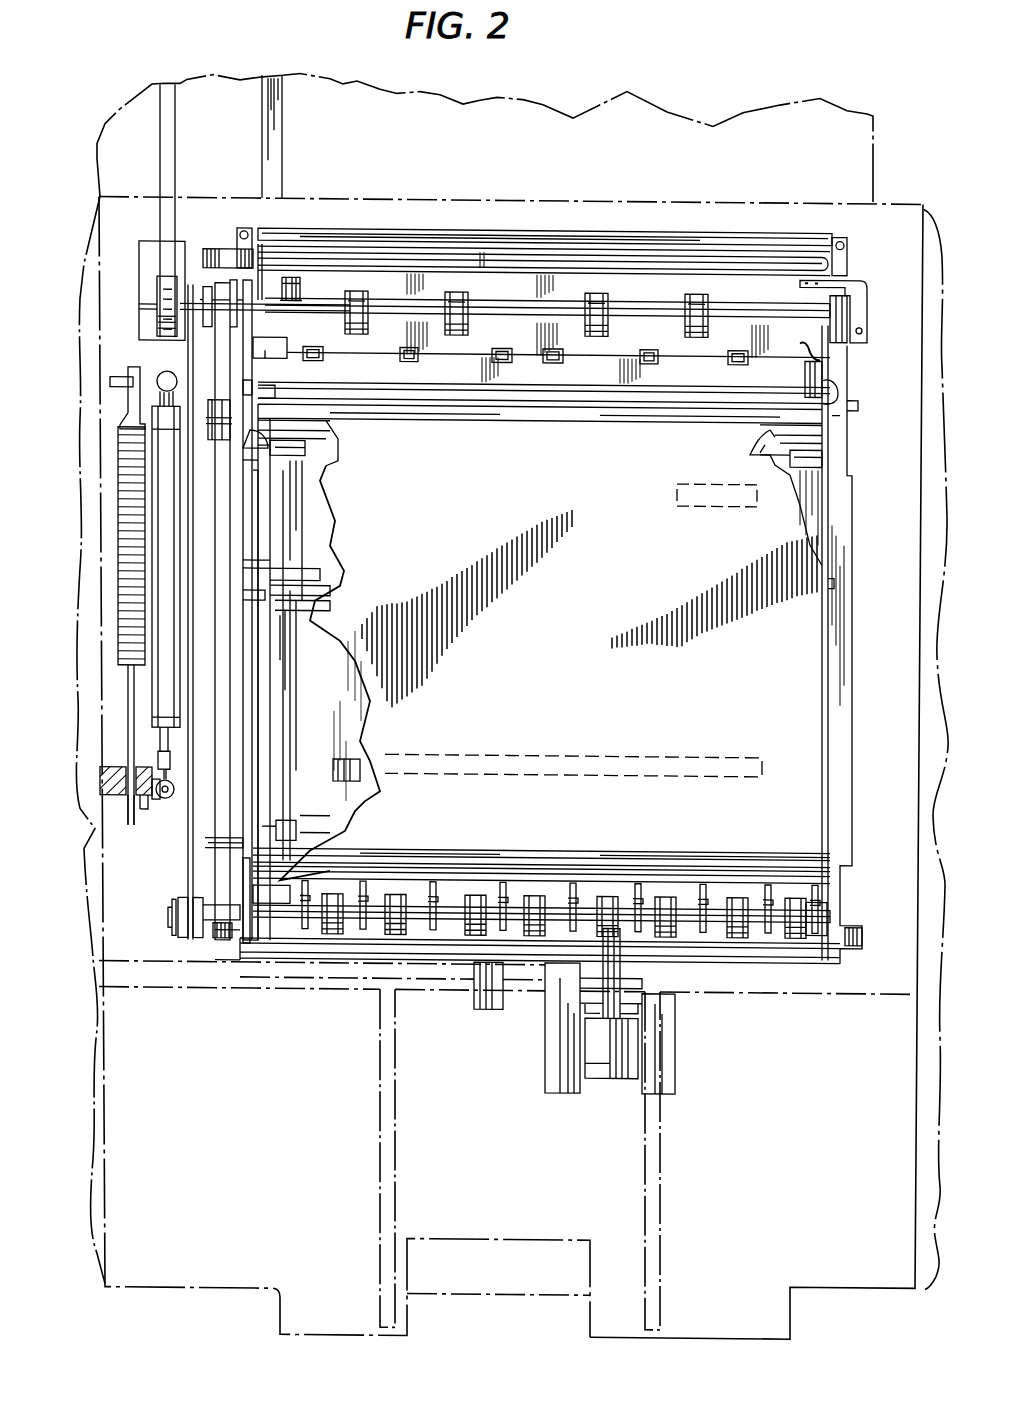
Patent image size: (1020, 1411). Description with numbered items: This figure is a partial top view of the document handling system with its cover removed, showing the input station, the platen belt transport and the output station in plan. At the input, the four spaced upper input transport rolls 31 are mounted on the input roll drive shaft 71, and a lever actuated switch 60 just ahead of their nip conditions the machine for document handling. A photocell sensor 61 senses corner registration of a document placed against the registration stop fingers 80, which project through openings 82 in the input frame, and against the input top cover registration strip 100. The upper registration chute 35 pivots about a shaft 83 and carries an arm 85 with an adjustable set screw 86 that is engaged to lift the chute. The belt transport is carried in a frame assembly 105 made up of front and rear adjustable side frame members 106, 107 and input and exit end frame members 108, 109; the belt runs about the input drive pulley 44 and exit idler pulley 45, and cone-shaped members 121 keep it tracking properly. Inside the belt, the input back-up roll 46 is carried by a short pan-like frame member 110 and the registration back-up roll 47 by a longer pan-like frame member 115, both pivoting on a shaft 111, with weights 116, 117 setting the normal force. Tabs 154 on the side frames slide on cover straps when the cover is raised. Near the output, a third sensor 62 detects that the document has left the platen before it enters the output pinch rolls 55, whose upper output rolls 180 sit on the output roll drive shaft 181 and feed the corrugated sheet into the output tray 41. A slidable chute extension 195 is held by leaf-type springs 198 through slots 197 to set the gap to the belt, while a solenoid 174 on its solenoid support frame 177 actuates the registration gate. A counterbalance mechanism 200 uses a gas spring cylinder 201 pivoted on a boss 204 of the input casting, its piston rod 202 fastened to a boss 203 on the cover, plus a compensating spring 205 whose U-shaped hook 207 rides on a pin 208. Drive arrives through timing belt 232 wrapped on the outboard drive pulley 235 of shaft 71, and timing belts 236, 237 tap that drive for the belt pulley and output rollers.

The upper input transport rolls 31 is at (360, 298).
The upper registration chute 35 is at (738, 246).
The output tray 41 is at (605, 1319).
The input drive pulley 44 is at (815, 432).
The exit idler pulley 45 is at (268, 848).
The input back-up roll 46 is at (308, 444).
The registration back-up roll 47 is at (296, 815).
The output pinch rolls 55 is at (855, 900).
The lever actuated switch 60 is at (300, 280).
The second sensor 61 is at (282, 345).
The third sensor 62 is at (276, 894).
The input roll drive shaft 71 is at (716, 312).
The registration stop fingers 80 is at (410, 360).
The openings 82 is at (656, 360).
The shaft 83 is at (782, 258).
The arm 85 is at (862, 308).
The adjustable set screw 86 is at (864, 326).
The input top cover registration strip 100 is at (283, 175).
The frame assembly 105 is at (854, 600).
The front adjustable side frame member 106 is at (845, 545).
The rear adjustable side frame member 107 is at (262, 568).
The input end frame member 108 is at (803, 388).
The exit end frame member 109 is at (815, 892).
The pan-like frame member 110 is at (322, 540).
The shaft 111 is at (333, 572).
The second pan-like frame member 115 is at (296, 724).
The weight 116 is at (722, 505).
The weight 117 is at (560, 768).
The cone-shaped members 121 is at (825, 455).
The tabs 154 is at (220, 940).
The solenoid 174 is at (612, 1065).
The solenoid support frame 177 is at (672, 1058).
The upper output rolls 180 is at (740, 925).
The output roll drive shaft 181 is at (778, 920).
The slidable chute extension 195 is at (250, 862).
The slots 197 is at (496, 878).
The leaf-type springs 198 is at (352, 878).
The counterbalance mechanism 200 is at (110, 445).
The gas spring cylinder 201 is at (158, 552).
The gas spring piston rod 202 is at (158, 756).
The boss 203 is at (135, 828).
The boss 204 is at (143, 367).
The compensating spring 205 is at (120, 498).
The U-shaped hook 207 is at (128, 812).
The pin 208 is at (150, 800).
The timing belt 232 is at (175, 172).
The outboard drive pulley 235 is at (152, 285).
The timing belt 236 is at (228, 350).
The timing belt 237 is at (186, 870).